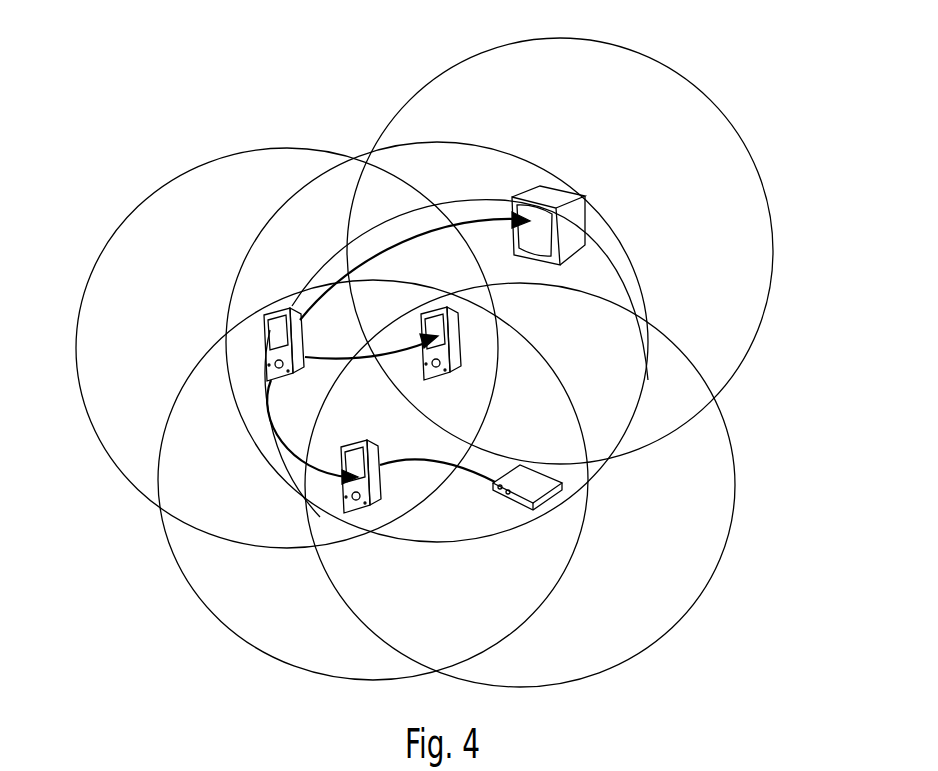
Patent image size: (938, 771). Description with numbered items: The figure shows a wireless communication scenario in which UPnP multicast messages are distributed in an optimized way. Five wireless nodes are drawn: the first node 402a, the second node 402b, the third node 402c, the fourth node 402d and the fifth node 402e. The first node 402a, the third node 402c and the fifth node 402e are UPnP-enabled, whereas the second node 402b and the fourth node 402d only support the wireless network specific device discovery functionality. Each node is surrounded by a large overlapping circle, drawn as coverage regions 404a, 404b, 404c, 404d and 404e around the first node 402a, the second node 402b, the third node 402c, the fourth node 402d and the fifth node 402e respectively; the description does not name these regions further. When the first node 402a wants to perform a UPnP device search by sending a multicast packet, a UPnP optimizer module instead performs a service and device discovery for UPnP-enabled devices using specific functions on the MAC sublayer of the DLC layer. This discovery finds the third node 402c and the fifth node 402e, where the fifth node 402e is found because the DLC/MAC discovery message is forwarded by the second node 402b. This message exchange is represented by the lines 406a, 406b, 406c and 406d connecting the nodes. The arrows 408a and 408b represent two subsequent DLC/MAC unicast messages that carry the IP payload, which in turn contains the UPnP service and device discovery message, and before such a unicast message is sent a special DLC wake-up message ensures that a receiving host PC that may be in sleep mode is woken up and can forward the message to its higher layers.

The node 1 402a is at (255, 351).
The node 2 402b is at (427, 297).
The node 3 402c is at (335, 508).
The node 4 402d is at (567, 470).
The node 5 402e is at (595, 233).
The coverage area of node 1 404a is at (125, 220).
The coverage area of node 2 404b is at (238, 266).
The coverage area of node 3 404c is at (233, 628).
The coverage area of node 4 404d is at (723, 552).
The coverage area of node 5 404e is at (740, 128).
The line 406a is at (374, 360).
The line 406b is at (273, 463).
The line 406c is at (470, 473).
The line 406d is at (497, 207).
The arrow 408a is at (265, 413).
The arrow 408b is at (455, 202).